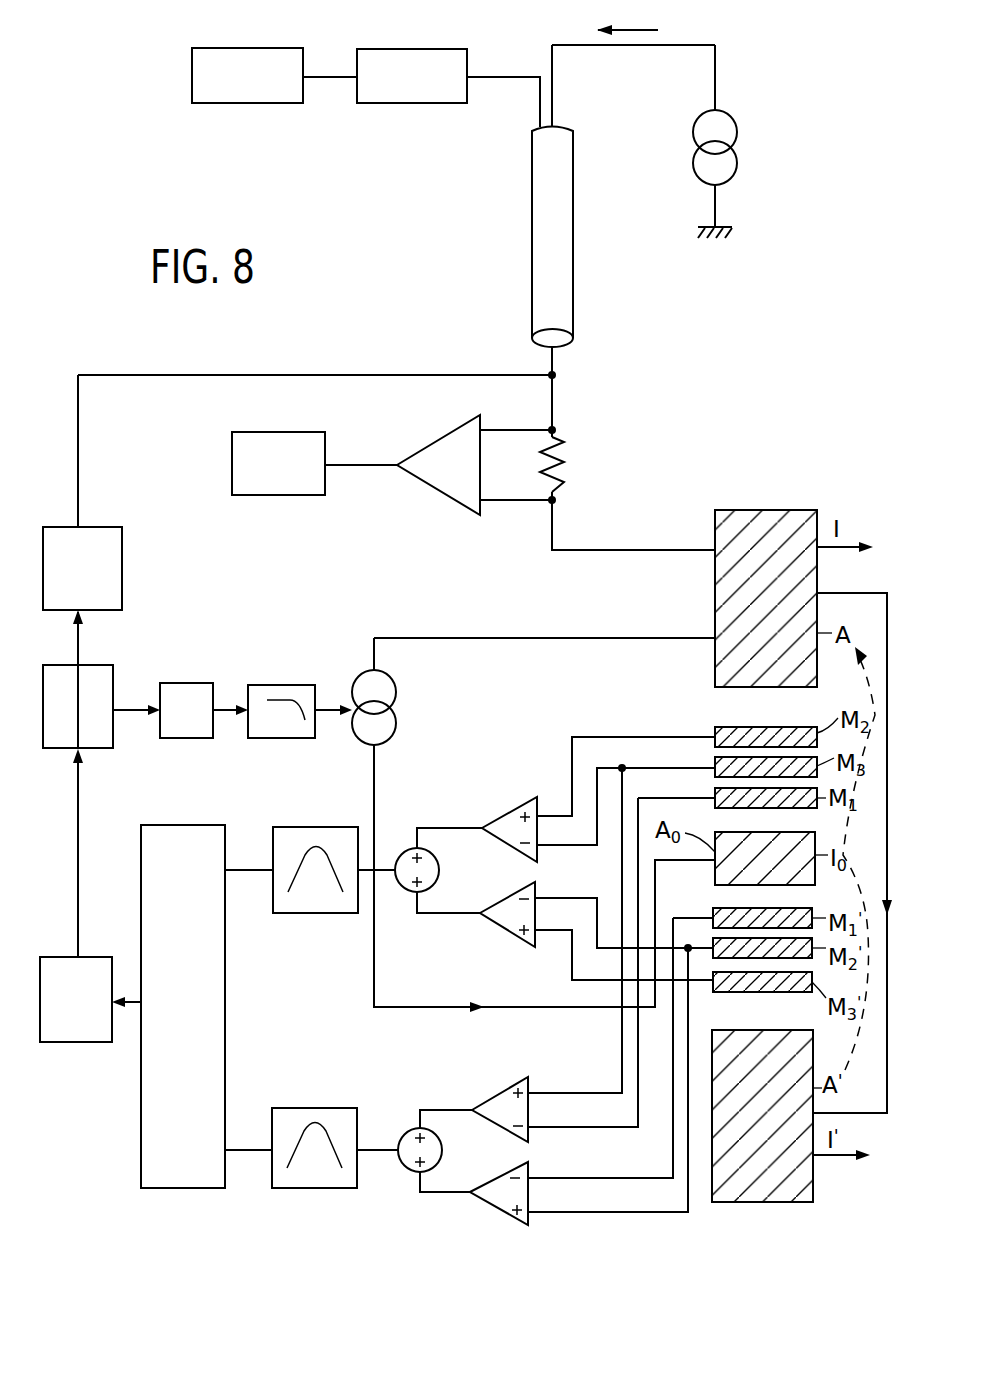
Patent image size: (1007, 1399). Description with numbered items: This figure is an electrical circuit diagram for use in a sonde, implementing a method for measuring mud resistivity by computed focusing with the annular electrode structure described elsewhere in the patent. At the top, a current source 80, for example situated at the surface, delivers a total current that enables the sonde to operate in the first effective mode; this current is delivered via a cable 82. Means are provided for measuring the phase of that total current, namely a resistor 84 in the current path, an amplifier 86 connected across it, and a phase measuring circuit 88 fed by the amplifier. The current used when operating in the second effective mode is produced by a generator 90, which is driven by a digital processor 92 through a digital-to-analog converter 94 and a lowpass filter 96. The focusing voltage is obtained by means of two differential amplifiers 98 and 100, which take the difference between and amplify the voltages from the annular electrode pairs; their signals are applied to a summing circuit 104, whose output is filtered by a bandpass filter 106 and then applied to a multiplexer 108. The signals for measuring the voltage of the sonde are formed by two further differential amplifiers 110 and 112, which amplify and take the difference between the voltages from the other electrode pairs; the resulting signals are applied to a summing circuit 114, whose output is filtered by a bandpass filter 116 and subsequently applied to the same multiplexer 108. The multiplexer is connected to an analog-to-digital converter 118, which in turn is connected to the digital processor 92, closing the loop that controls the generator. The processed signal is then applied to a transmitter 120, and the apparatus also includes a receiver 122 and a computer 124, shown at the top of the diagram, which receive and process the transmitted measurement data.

The current source 80 is at (687, 143).
The cable 82 is at (567, 280).
The resistor 84 is at (568, 462).
The amplifier 86 is at (455, 490).
The phase measuring circuit 88 is at (283, 495).
The generator 90 is at (396, 707).
The digital processor 92 is at (102, 745).
The digital-to-analog converter 94 is at (200, 738).
The lowpass filter 96 is at (298, 738).
The differential amplifier 98 is at (500, 813).
The differential amplifier 100 is at (508, 928).
The summing circuit 104 is at (439, 870).
The bandpass filter 106 is at (308, 913).
The multiplexer 108 is at (217, 1047).
The differential amplifier 110 is at (500, 1093).
The differential amplifier 112 is at (500, 1210).
The summing circuit 114 is at (442, 1148).
The bandpass filter 116 is at (300, 1188).
The analog-to-digital converter 118 is at (65, 1042).
The transmitter 120 is at (117, 588).
The receiver 122 is at (415, 103).
The computer 124 is at (233, 103).